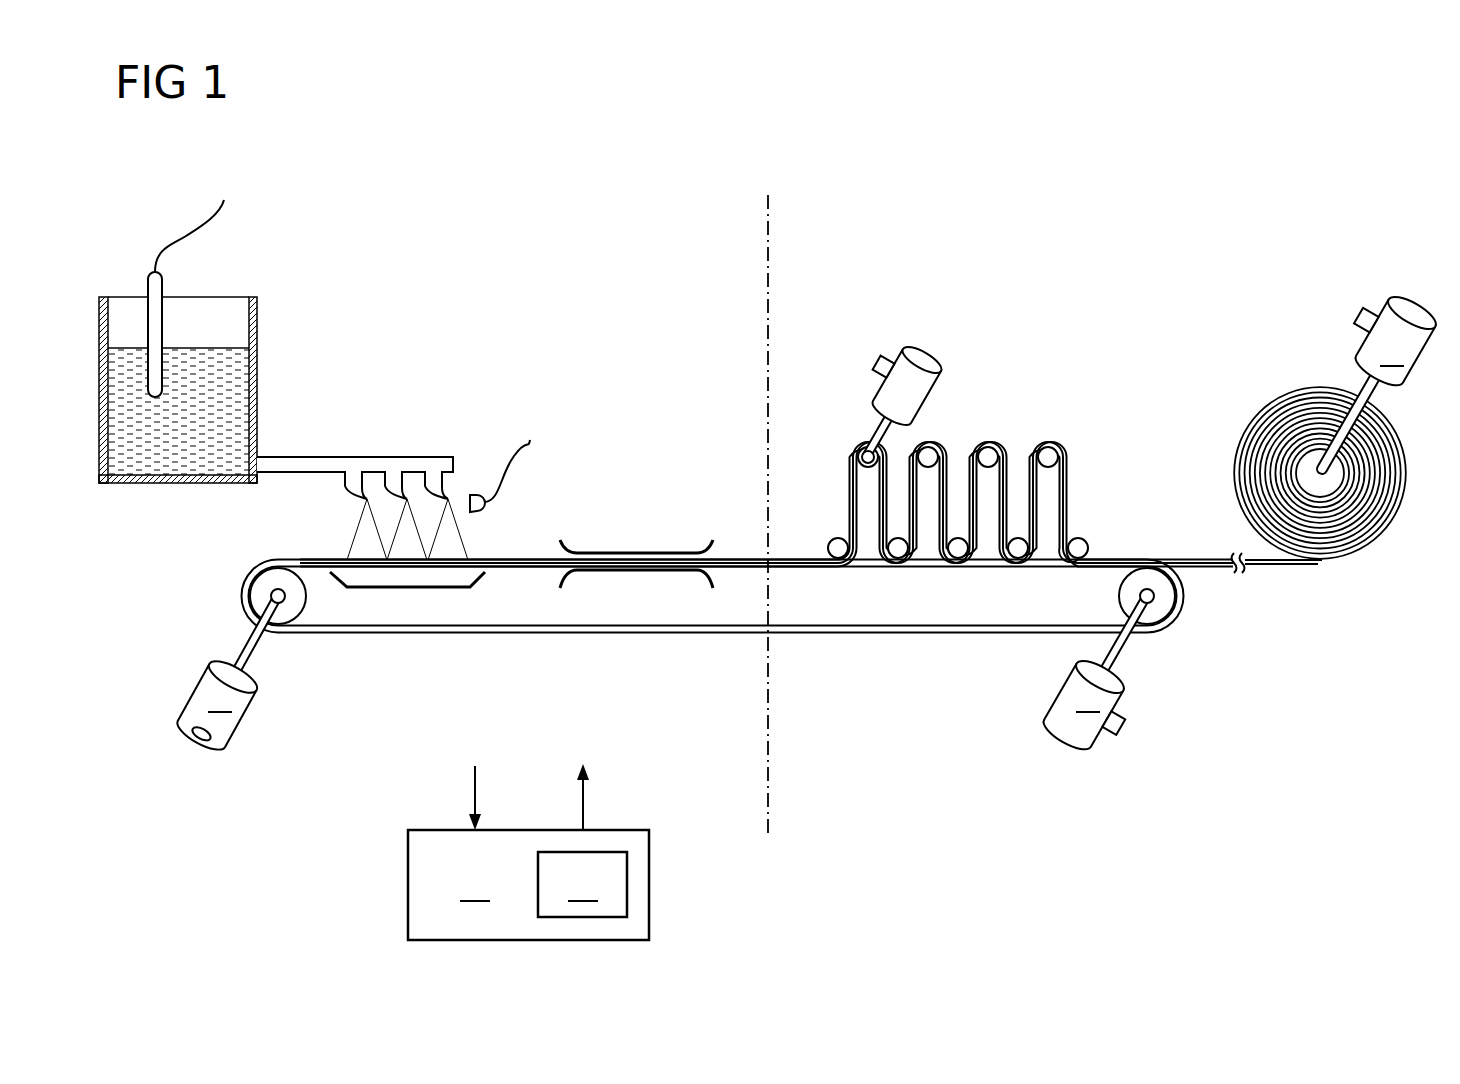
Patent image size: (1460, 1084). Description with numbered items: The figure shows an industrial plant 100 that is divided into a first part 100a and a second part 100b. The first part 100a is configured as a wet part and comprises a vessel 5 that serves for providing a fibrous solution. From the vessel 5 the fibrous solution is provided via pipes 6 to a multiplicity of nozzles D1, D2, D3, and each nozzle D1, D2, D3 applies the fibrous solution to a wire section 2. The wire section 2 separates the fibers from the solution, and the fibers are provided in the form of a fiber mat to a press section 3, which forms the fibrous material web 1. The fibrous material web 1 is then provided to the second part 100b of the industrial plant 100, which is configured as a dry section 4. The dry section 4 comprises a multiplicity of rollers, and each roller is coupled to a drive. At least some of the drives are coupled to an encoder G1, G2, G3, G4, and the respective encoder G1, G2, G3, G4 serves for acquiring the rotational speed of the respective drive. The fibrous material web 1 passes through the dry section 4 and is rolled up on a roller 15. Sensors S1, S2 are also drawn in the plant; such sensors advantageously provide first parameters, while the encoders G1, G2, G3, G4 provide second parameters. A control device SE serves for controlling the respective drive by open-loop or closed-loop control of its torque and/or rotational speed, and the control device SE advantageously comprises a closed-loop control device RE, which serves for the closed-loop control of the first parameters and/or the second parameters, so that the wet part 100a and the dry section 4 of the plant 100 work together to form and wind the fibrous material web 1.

The fibrous material web 1 is at (1201, 550).
The wire section 2 is at (417, 577).
The press section 3 is at (640, 535).
The dry section 4 is at (1096, 297).
The vessel 5 is at (257, 324).
The pipes 6 is at (472, 440).
The roller 15 is at (1365, 525).
The industrial plant 100 is at (886, 762).
The first part 100a is at (763, 183).
The second part 100b is at (1454, 183).
The sensor S1 is at (160, 343).
The sensor S2 is at (478, 513).
The nozzle D1 is at (343, 472).
The nozzle D2 is at (388, 472).
The nozzle D3 is at (431, 472).
The encoder G1 is at (195, 745).
The encoder G2 is at (878, 368).
The encoder G3 is at (1124, 738).
The encoder G4 is at (1357, 318).
The control device SE is at (517, 838).
The closed-loop control device RE is at (582, 884).